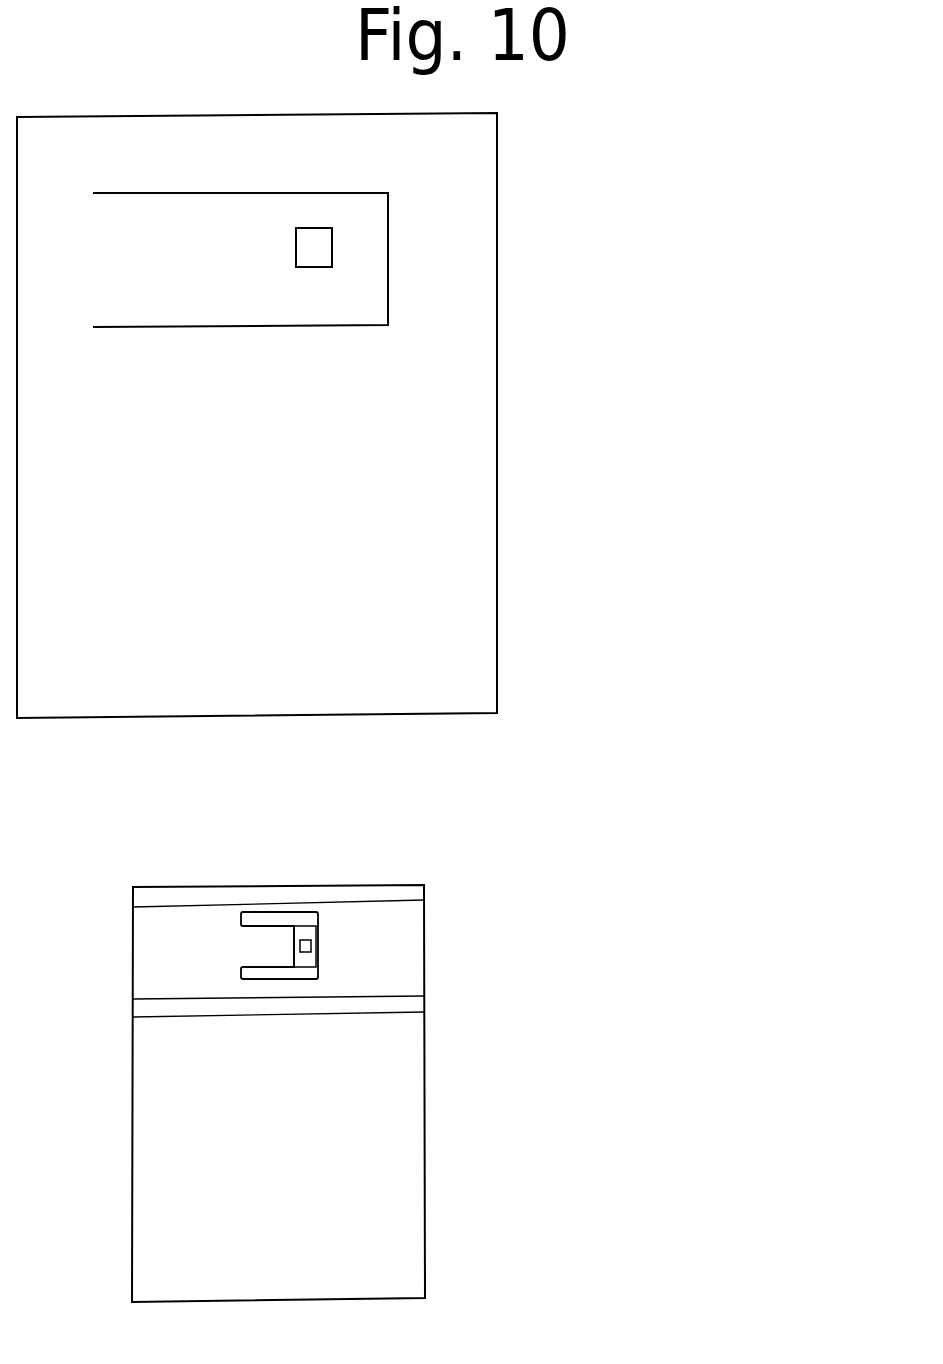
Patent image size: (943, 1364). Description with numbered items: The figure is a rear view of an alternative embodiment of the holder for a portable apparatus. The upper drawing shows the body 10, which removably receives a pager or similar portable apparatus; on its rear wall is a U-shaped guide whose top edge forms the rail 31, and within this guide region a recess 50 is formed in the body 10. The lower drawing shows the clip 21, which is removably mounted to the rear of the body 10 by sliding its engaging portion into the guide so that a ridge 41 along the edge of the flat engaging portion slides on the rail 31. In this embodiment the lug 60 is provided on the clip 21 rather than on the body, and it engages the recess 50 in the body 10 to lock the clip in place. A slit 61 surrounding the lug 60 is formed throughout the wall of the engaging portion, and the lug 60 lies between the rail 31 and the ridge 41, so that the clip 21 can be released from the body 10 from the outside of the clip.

The body 10 is at (499, 378).
The rail 31 is at (318, 190).
The recess 50 is at (334, 245).
The clip 21 is at (428, 1163).
The ridge 41 is at (428, 1013).
The slit 61 is at (318, 920).
The lug 60 is at (318, 938).